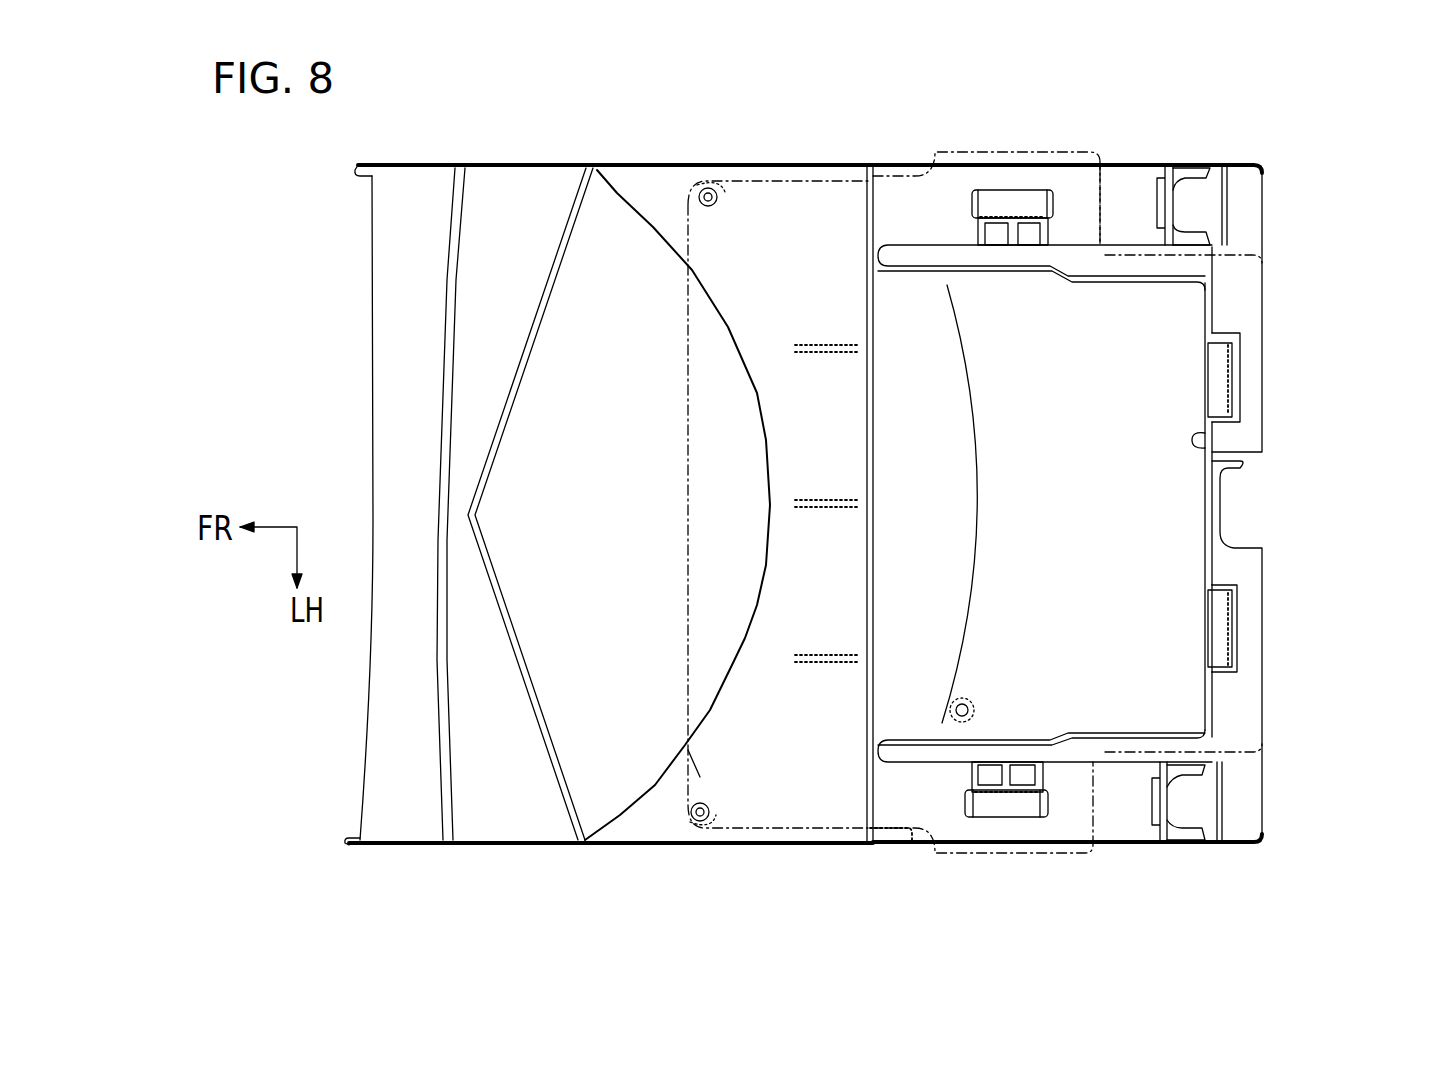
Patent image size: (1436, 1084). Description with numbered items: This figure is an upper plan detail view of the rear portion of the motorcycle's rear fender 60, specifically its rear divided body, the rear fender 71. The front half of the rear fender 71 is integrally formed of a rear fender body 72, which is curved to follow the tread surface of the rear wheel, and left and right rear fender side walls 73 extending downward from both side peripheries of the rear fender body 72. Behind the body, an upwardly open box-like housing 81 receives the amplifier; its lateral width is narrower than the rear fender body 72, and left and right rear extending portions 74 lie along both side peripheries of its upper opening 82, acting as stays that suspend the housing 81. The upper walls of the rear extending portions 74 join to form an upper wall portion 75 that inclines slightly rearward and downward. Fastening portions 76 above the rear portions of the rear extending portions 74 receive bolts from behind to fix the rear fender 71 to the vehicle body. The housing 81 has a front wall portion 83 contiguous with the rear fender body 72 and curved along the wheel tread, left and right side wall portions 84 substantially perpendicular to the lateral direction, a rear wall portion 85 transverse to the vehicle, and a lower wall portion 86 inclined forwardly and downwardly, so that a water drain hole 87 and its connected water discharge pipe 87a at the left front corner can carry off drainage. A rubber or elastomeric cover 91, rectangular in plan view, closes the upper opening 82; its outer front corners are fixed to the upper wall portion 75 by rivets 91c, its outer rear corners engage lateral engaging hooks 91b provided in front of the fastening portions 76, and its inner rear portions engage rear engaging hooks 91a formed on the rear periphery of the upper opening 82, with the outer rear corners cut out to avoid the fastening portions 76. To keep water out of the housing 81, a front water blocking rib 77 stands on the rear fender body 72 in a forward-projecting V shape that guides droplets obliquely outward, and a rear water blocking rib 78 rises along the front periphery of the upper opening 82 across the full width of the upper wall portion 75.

The rear fender 60 is at (609, 445).
The rear fender 71 is at (500, 165).
The rear fender body 72 is at (633, 247).
The rear fender side walls 73 is at (686, 165).
The rear extending portions 74 is at (1130, 177).
The upper wall portion 75 is at (771, 212).
The fastening portions 76 is at (1197, 165).
The front water blocking rib 77 is at (556, 285).
The rear water blocking rib 78 is at (868, 290).
The housing 81 is at (1265, 305).
The upper opening 82 is at (1198, 446).
The front wall portion 83 is at (945, 470).
The side wall portions 84 is at (1088, 278).
The rear wall portion 85 is at (1198, 562).
The lower wall portion 86 is at (1087, 480).
The water drain hole 87 is at (965, 722).
The water discharge pipe 87a is at (956, 720).
The cover 91 is at (815, 170).
The rear engaging hooks 91a is at (1243, 378).
The lateral engaging hooks 91b is at (1008, 190).
The rivets 91c is at (727, 175).